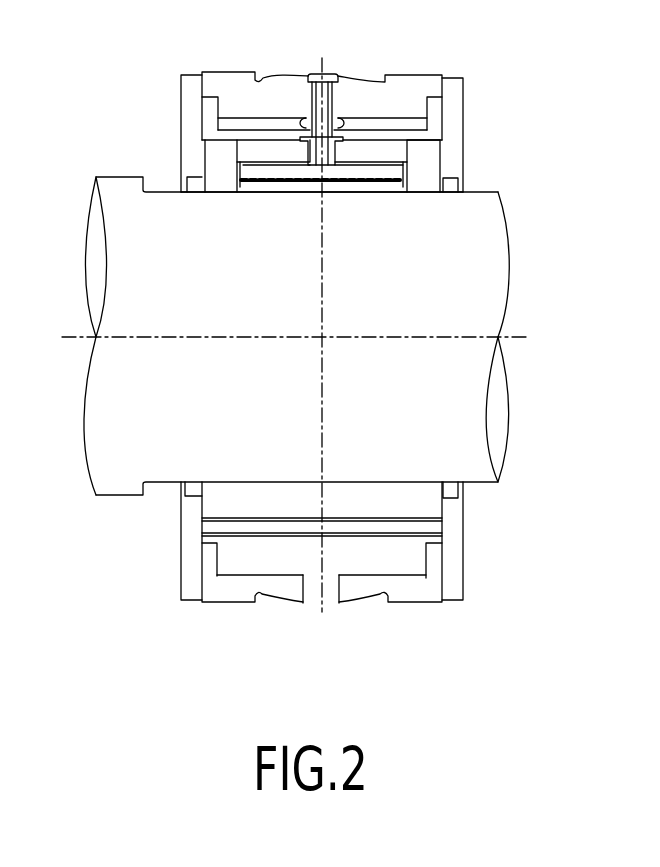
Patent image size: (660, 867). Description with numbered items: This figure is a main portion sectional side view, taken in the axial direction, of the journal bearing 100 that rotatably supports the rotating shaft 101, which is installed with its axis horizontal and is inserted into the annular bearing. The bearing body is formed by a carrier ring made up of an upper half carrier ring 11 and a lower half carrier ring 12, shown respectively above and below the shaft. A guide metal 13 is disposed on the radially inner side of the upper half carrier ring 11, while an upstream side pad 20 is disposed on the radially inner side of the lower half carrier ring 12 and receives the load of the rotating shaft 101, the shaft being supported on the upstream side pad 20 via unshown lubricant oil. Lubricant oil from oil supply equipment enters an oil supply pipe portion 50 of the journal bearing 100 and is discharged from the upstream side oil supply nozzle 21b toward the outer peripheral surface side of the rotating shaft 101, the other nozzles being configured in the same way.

The journal bearing 100 is at (499, 579).
The rotating shaft 101 is at (462, 258).
The upper half carrier ring 11 is at (352, 105).
The lower half carrier ring 12 is at (277, 592).
The guide metal 13 is at (425, 168).
The upstream side pad 20 is at (372, 510).
The upstream side oil supply nozzle 21b is at (352, 168).
The oil supply pipe portion 50 is at (320, 583).